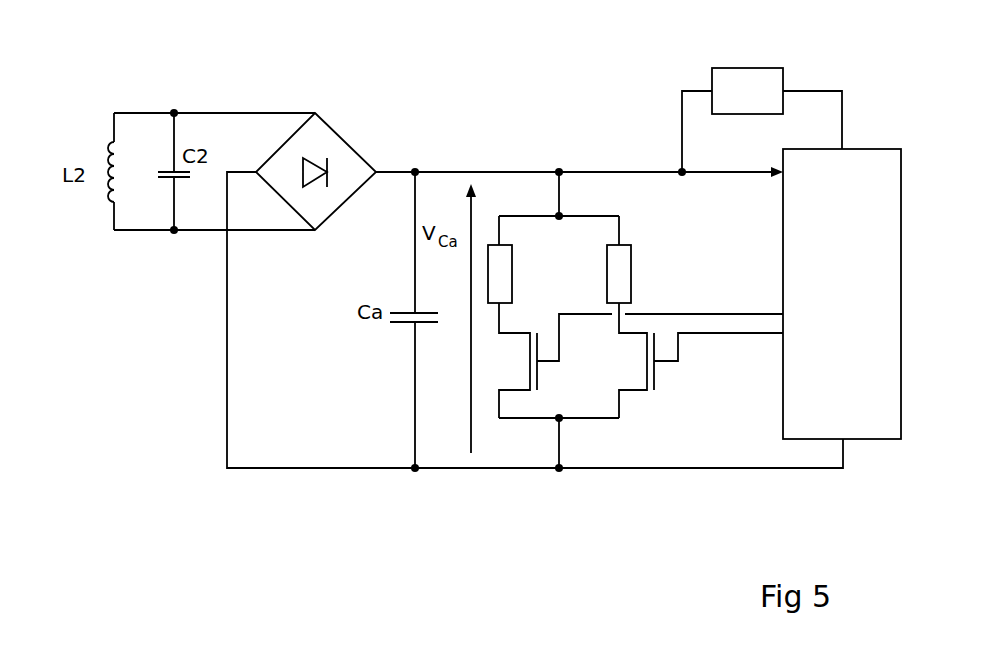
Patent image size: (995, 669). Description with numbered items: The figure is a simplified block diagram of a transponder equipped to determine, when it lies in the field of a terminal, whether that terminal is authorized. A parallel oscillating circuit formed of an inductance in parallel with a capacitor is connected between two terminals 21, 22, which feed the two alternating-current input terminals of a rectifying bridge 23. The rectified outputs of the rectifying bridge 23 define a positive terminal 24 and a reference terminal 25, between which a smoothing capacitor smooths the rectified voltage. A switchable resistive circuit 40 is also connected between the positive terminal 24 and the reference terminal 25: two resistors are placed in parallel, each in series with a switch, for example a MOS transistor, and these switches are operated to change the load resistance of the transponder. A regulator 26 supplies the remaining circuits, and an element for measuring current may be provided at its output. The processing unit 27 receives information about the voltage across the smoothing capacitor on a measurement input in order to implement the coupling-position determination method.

The terminal 21 is at (176, 113).
The terminal 22 is at (174, 233).
The rectifying bridge 23 is at (349, 146).
The positive terminal 24 is at (418, 171).
The reference terminal 25 is at (415, 472).
The regulator 26 is at (743, 68).
The processing unit 27 is at (877, 149).
The switchable resistive circuit 40 is at (548, 250).